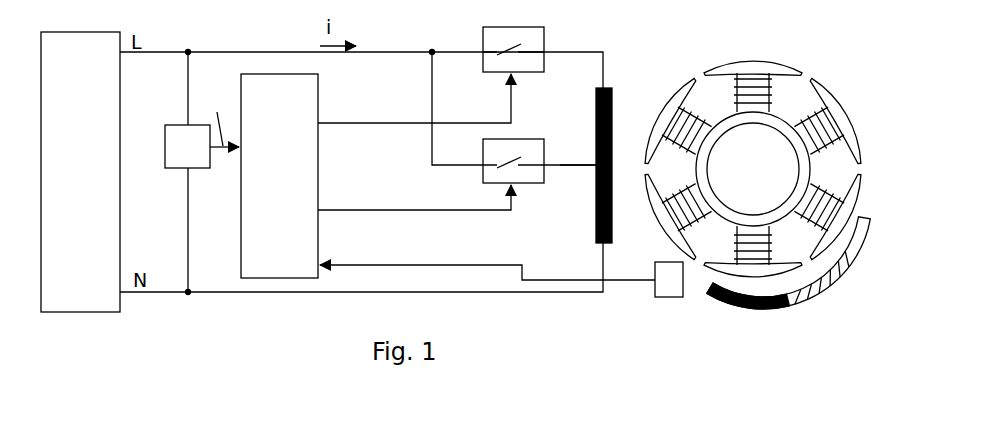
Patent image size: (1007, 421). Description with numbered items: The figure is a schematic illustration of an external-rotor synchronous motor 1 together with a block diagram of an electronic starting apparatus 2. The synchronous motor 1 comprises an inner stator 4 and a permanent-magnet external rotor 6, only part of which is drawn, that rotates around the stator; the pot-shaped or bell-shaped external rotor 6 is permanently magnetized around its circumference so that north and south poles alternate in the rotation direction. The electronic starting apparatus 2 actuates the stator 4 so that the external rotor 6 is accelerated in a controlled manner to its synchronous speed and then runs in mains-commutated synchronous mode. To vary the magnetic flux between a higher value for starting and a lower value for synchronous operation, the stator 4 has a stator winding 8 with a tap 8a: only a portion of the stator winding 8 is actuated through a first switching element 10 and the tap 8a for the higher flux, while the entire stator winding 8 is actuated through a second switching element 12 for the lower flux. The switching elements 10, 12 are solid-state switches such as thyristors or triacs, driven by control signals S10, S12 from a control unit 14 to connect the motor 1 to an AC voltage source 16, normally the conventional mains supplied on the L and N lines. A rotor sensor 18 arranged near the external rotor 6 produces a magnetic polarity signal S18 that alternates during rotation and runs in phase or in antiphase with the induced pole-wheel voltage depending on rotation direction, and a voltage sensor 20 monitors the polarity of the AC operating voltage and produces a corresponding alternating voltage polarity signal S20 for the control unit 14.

The external-rotor synchronous motor 1 is at (801, 315).
The electronic starting apparatus 2 is at (272, 41).
The inner stator 4 is at (787, 268).
The permanent-magnet external rotor 6 is at (717, 297).
The stator winding 8 is at (608, 86).
The tap 8a is at (575, 165).
The first switching element 10 is at (531, 178).
The second switching element 12 is at (529, 67).
The control unit 14 is at (300, 180).
The AC voltage source 16 is at (103, 207).
The rotor sensor 18 is at (672, 292).
The voltage sensor 20 is at (189, 152).
The control signal S10 is at (453, 211).
The control signal S12 is at (412, 125).
The magnetic polarity signal S18 is at (453, 265).
The voltage polarity signal S20 is at (214, 116).